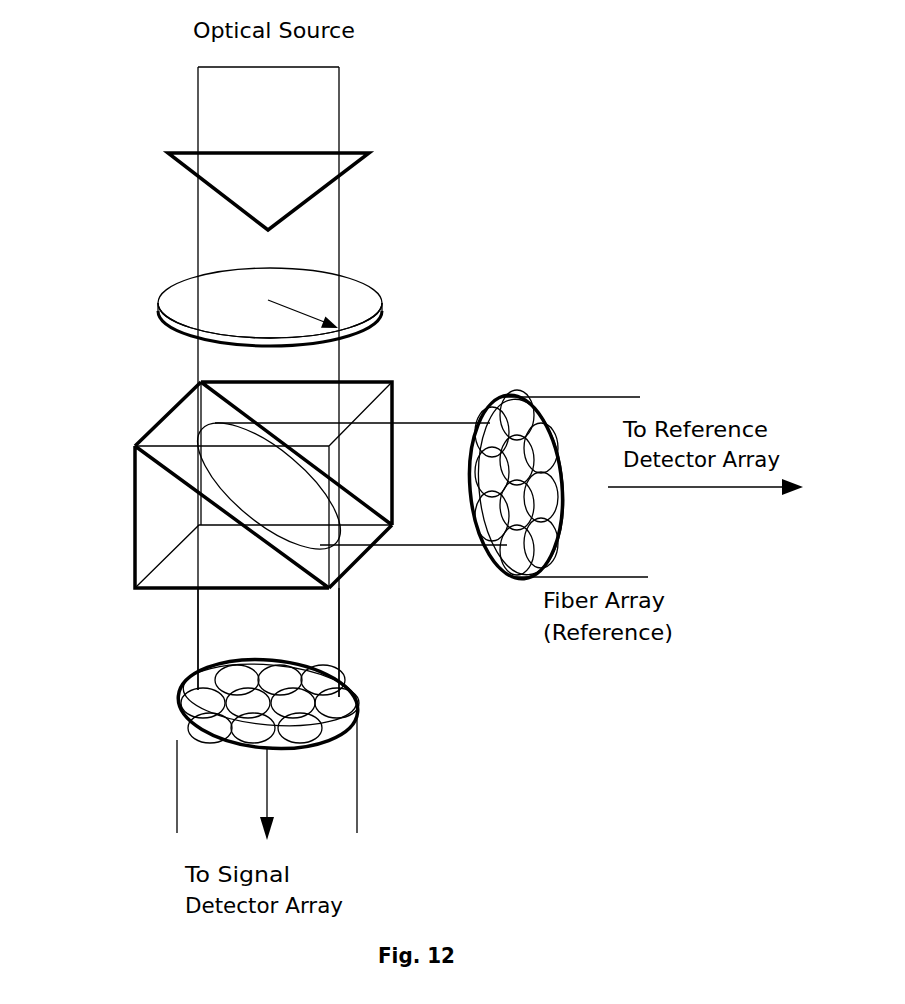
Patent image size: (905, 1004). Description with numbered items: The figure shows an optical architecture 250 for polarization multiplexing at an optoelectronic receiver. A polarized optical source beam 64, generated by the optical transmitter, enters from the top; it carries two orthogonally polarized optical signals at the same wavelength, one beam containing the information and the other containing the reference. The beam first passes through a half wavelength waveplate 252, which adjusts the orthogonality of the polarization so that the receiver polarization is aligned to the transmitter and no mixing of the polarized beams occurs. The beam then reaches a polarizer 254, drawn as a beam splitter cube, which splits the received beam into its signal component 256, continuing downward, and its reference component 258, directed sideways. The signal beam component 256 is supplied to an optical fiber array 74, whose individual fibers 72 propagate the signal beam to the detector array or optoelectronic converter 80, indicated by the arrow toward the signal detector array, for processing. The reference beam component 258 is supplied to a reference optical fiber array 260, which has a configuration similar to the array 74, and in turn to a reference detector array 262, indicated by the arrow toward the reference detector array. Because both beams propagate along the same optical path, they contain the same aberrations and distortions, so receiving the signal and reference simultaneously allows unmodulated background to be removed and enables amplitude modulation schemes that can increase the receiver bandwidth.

The optical architecture 250 is at (639, 230).
The polarized optical source beam 64 is at (325, 140).
The half wavelength waveplate 252 is at (365, 282).
The polarizer 254 is at (135, 518).
The signal beam component 256 is at (218, 600).
The reference beam component 258 is at (405, 440).
The reference optical fiber array 260 is at (513, 577).
The reference detector array 262 is at (702, 487).
The optical fiber 72 is at (188, 733).
The optical fiber array 74 is at (180, 692).
The optoelectronic converter 80 is at (265, 772).